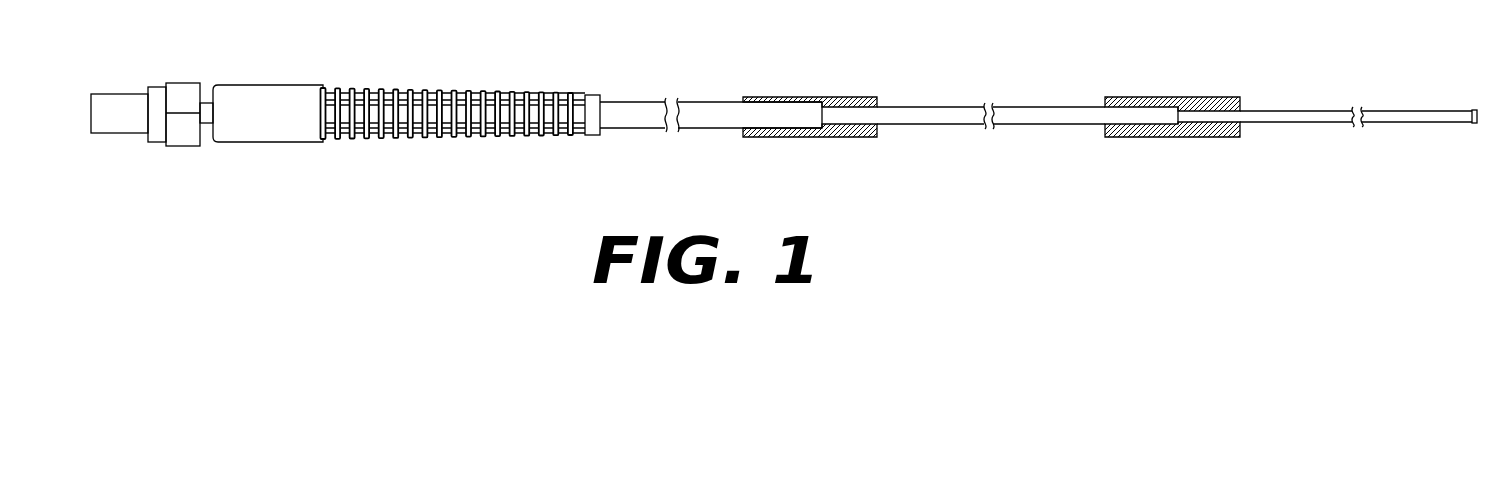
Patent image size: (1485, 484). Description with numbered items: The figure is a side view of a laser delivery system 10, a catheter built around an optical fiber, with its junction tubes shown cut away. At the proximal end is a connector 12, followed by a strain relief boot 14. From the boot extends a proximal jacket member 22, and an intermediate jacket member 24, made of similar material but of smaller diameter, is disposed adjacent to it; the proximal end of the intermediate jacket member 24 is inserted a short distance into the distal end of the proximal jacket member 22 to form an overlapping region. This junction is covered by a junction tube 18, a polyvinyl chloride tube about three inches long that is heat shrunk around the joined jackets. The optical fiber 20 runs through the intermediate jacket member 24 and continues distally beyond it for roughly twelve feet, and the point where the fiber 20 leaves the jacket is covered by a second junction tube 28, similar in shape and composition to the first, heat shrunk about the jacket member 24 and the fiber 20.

The laser delivery system 10 is at (738, 40).
The connector 12 is at (182, 98).
The strain relief boot 14 is at (268, 102).
The junction tube 18 is at (822, 132).
The optical fiber 20 is at (1330, 118).
The proximal jacket member 22 is at (650, 117).
The intermediate jacket member 24 is at (1005, 112).
The junction tube 28 is at (1168, 97).